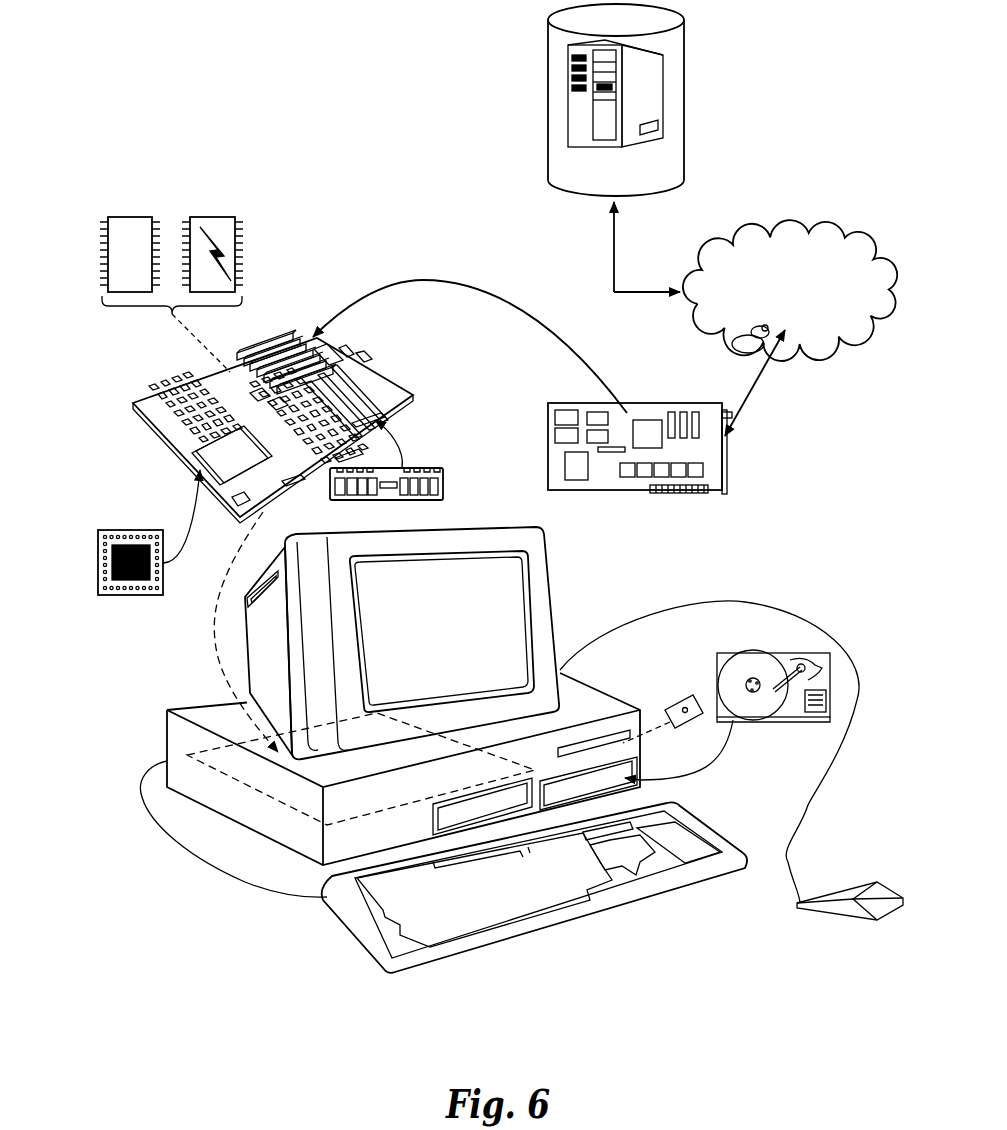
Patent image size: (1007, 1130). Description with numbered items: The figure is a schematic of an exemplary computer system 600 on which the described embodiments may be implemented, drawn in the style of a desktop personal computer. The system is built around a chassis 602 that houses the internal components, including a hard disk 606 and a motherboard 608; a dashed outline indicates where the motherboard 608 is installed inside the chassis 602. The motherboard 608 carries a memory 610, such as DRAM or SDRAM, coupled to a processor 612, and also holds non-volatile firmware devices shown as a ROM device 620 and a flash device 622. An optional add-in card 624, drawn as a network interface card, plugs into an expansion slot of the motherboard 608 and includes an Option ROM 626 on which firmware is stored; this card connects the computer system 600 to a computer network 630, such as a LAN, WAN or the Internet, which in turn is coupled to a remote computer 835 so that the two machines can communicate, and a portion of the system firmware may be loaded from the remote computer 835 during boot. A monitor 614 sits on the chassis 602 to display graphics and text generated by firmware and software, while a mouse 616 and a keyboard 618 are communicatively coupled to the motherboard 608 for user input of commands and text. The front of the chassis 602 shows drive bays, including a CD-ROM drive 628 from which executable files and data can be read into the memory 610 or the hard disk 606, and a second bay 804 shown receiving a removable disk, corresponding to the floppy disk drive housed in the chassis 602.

The computer system 600 is at (417, 767).
The chassis 602 is at (183, 735).
The hard disk 606 is at (782, 716).
The motherboard 608 is at (147, 385).
The memory 610 is at (443, 487).
The processor 612 is at (140, 596).
The monitor 614 is at (547, 592).
The mouse 616 is at (850, 917).
The keyboard 618 is at (627, 903).
The ROM device 620 is at (125, 223).
The flash device 622 is at (223, 222).
The add-in card 624 is at (716, 449).
The Option ROM 626 is at (563, 408).
The CD-ROM drive 628 is at (432, 820).
The computer network 630 is at (835, 335).
The floppy disk drive 804 is at (600, 745).
The remote computer 835 is at (686, 62).